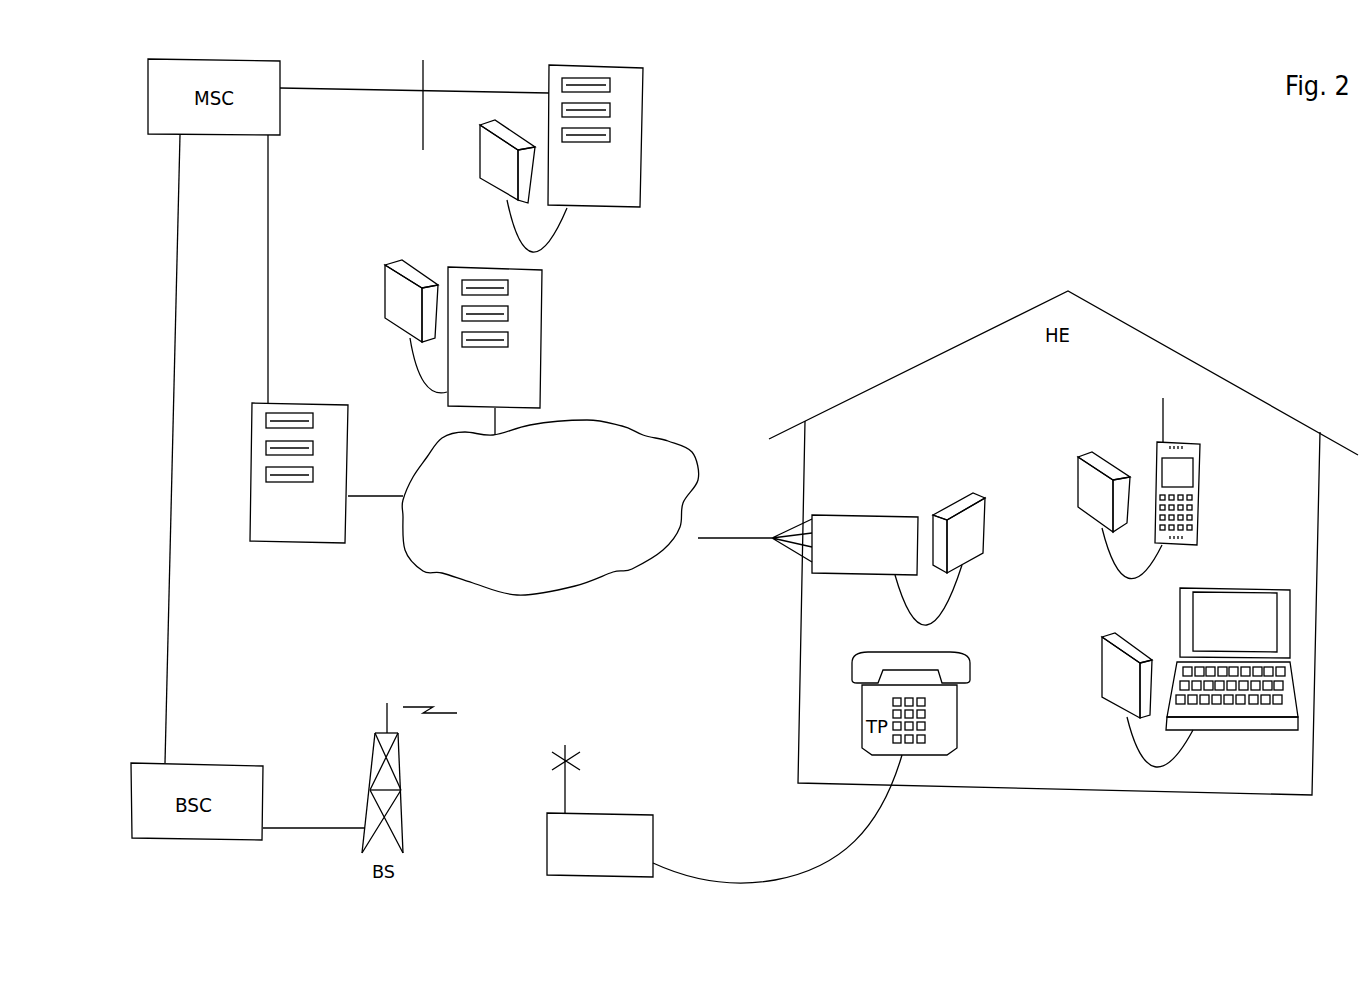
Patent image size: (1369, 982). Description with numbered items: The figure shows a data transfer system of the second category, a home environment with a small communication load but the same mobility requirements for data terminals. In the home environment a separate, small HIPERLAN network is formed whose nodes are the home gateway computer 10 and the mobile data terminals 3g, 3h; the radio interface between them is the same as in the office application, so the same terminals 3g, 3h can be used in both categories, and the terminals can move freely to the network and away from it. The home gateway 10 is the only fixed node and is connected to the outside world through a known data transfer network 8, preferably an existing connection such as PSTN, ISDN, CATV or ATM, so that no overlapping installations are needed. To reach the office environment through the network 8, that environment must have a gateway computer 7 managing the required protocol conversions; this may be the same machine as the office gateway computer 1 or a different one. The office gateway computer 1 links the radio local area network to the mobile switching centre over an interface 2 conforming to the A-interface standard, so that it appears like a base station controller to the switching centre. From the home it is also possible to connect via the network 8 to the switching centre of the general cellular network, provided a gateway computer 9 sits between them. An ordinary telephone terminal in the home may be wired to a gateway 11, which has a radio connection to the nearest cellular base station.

The gateway computer 1 is at (645, 115).
The interface 2 is at (423, 140).
The gateway computer 7 is at (463, 334).
The data transfer network 8 is at (607, 435).
The gateway computer 9 is at (298, 403).
The home gateway computer 10 is at (837, 515).
The gateway 11 is at (600, 813).
The mobile data terminal 3g is at (1200, 482).
The mobile data terminal 3h is at (1230, 588).